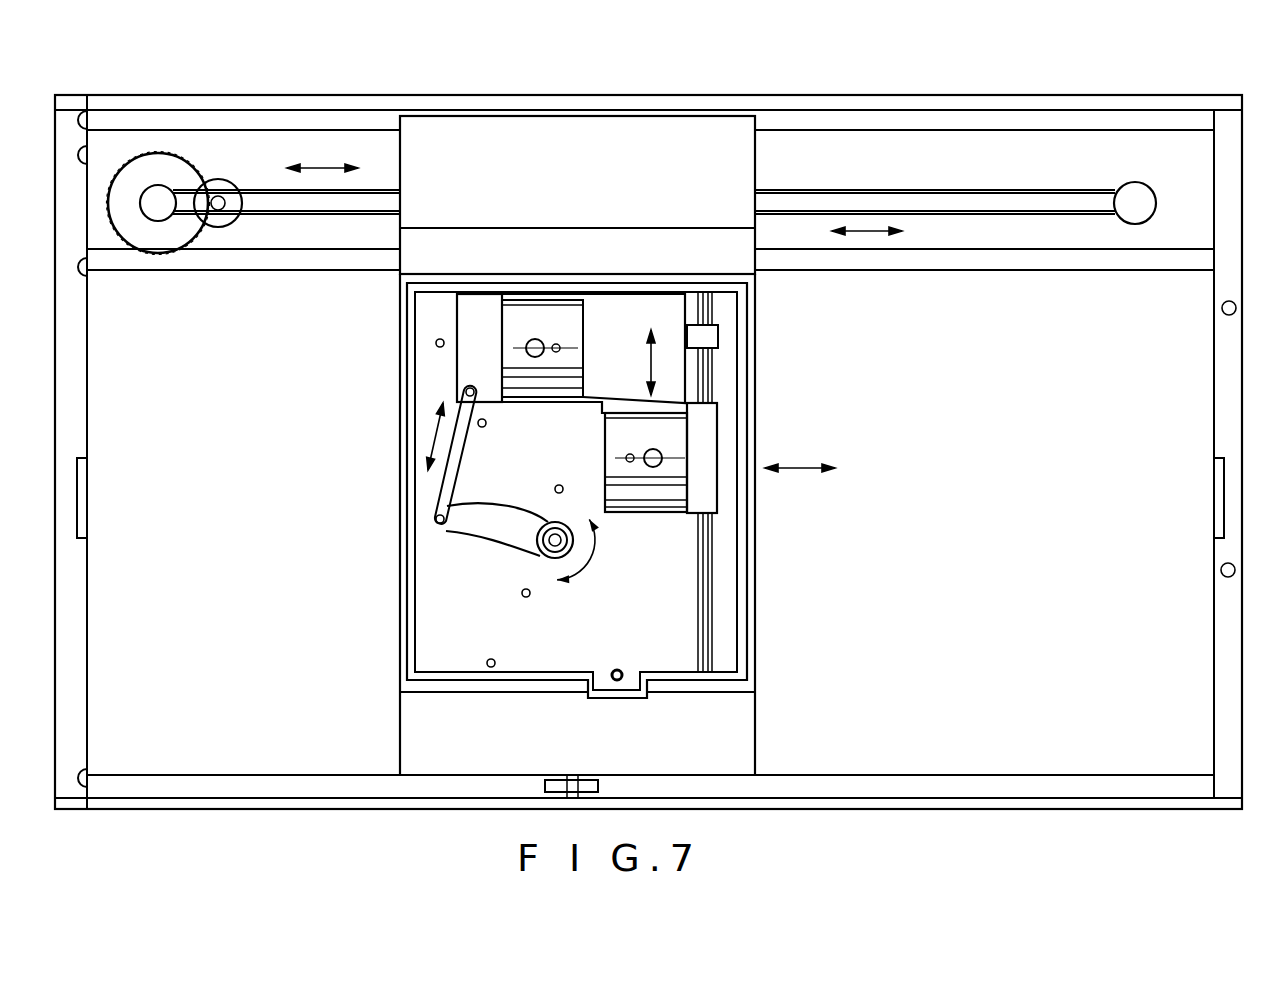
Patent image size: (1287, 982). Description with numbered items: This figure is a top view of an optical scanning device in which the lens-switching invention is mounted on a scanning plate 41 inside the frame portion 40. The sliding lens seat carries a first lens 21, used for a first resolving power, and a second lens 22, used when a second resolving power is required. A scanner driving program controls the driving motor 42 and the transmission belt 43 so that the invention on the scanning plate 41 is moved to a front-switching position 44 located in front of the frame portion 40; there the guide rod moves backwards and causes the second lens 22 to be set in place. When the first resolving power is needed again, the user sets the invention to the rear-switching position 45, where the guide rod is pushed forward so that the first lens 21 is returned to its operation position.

The first lens 21 is at (710, 495).
The second lens 22 is at (461, 307).
The frame portion 40 is at (988, 812).
The scanning plate 41 is at (766, 272).
The driving motor 42 is at (152, 158).
The transmission belt 43 is at (262, 190).
The front-switching position 44 is at (80, 482).
The rear-switching position 45 is at (1222, 468).